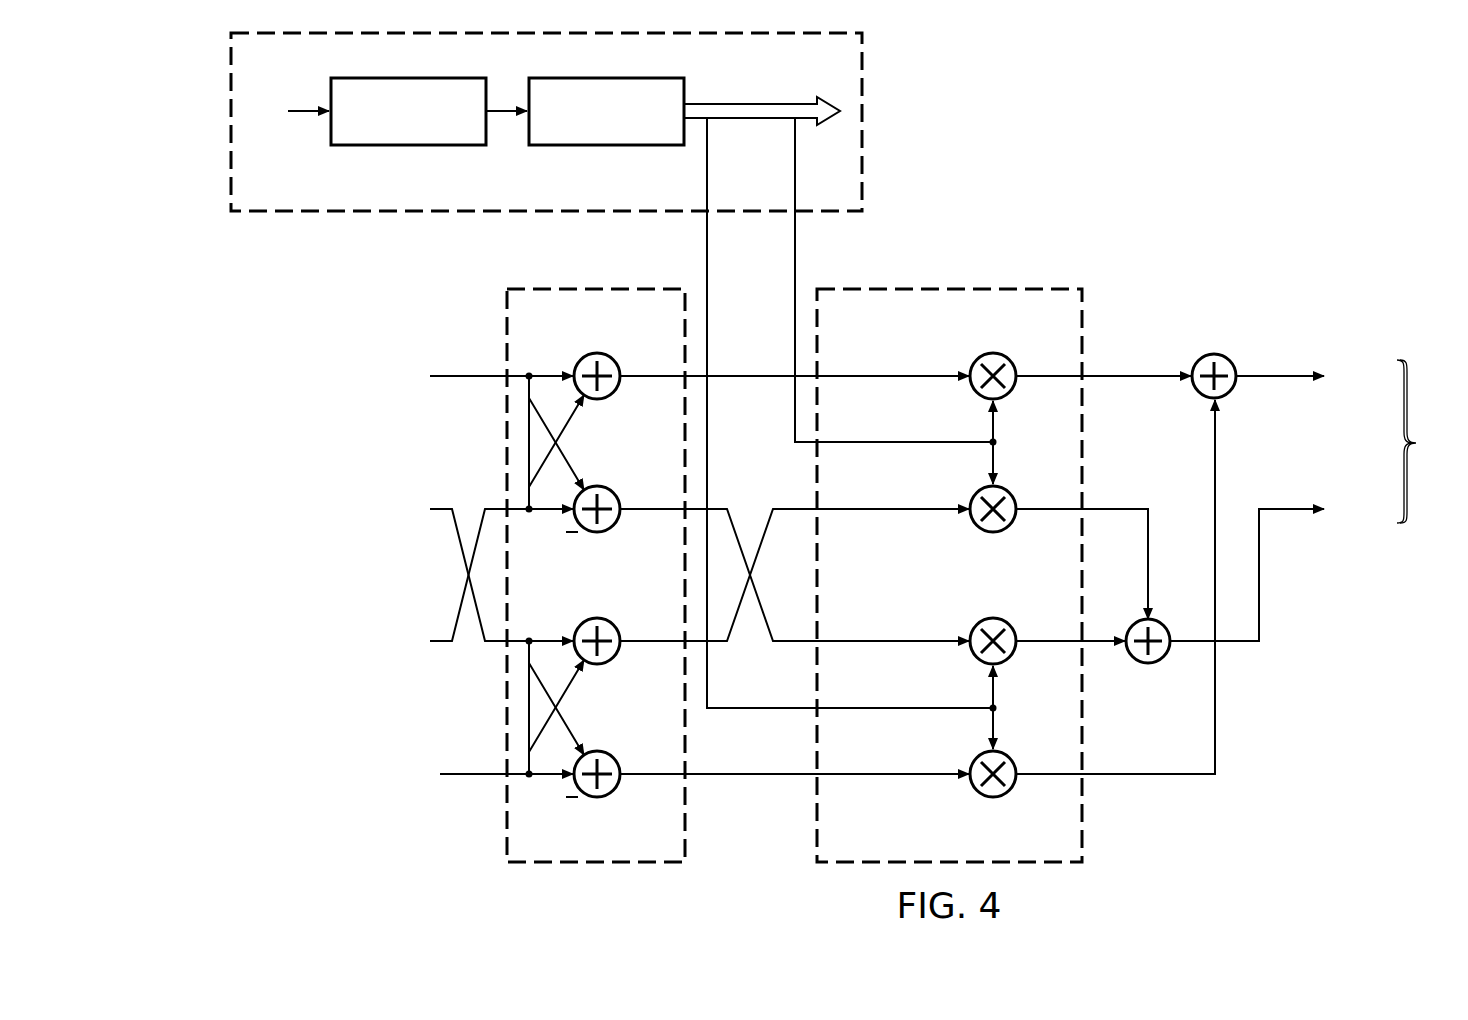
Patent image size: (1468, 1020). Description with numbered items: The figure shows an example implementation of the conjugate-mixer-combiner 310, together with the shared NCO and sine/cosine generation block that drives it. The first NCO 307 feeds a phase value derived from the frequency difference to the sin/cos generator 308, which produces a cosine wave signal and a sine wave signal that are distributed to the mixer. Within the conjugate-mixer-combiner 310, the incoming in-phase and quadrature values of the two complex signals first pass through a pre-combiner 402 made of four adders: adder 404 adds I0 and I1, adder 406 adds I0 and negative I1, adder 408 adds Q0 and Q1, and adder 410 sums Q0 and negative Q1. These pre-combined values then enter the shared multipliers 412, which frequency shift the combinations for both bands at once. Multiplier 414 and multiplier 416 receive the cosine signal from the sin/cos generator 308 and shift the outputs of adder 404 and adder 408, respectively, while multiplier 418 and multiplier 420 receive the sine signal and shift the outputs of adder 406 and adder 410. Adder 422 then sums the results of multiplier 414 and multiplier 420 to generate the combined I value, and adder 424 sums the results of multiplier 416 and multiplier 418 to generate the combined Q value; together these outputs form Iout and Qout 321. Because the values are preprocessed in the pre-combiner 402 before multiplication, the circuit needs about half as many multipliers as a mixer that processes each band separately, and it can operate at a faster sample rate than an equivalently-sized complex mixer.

The first NCO 307 is at (409, 146).
The sin/cos generator 308 is at (607, 146).
The conjugate-mixer-combiner 310 is at (160, 263).
The Iout and Qout 321 is at (1315, 500).
The pre-combiner 402 is at (570, 286).
The adder 404 is at (606, 394).
The adder 406 is at (606, 527).
The adder 408 is at (606, 659).
The adder 410 is at (606, 792).
The shared multipliers 412 is at (975, 286).
The multiplier 414 is at (1010, 392).
The multiplier 416 is at (1010, 525).
The multiplier 418 is at (1010, 657).
The multiplier 420 is at (1010, 790).
The adder 422 is at (1228, 356).
The adder 424 is at (1162, 660).